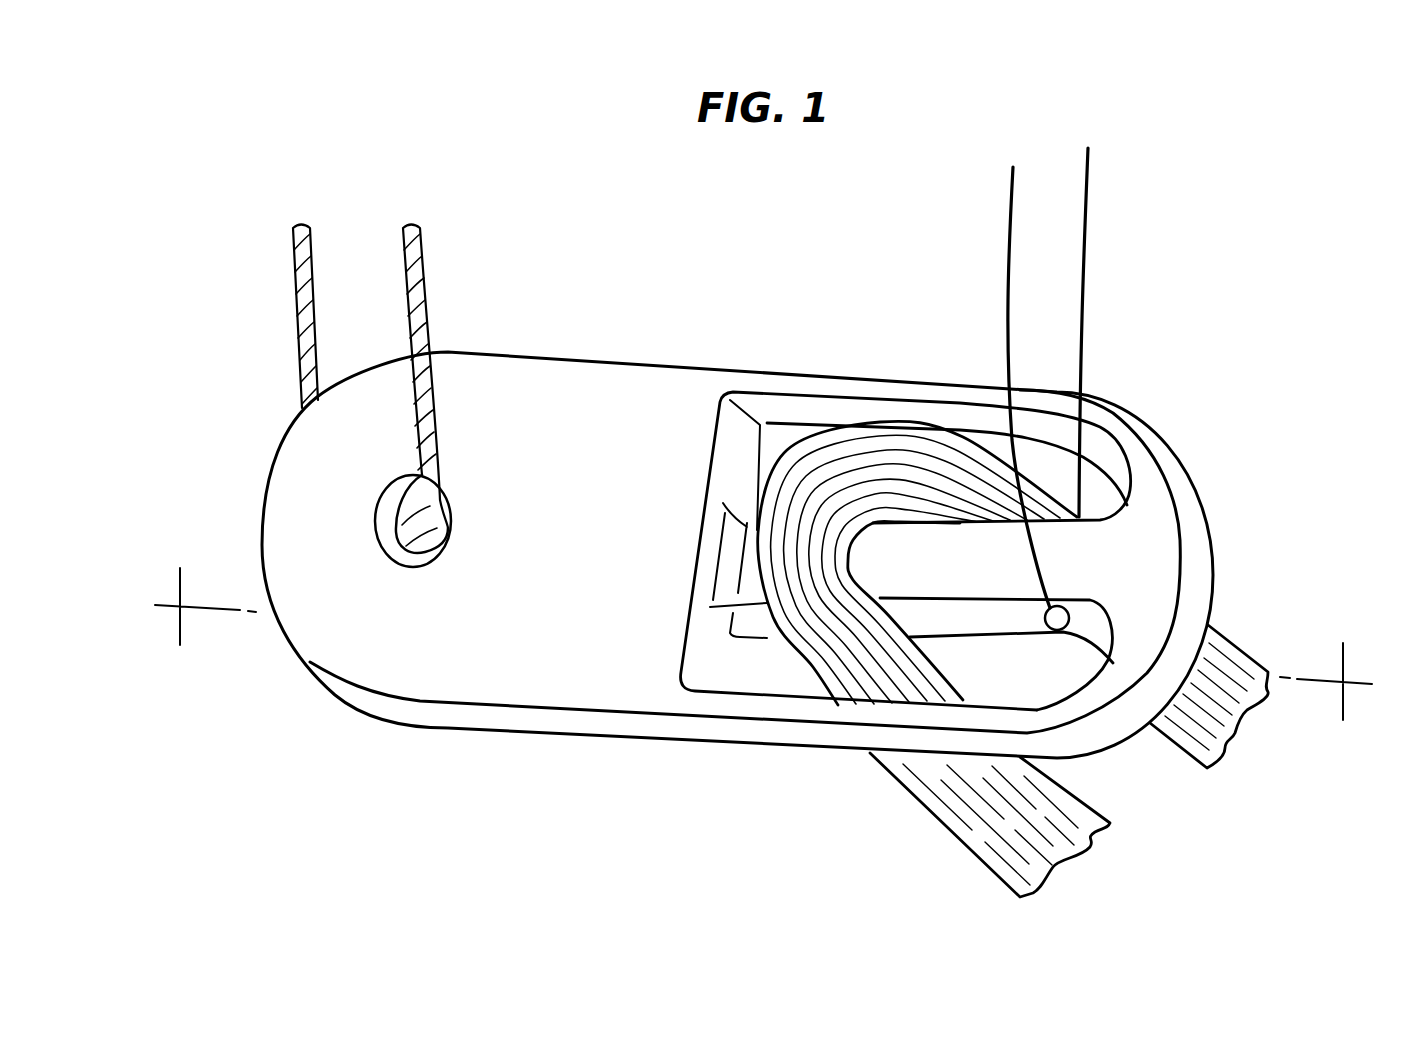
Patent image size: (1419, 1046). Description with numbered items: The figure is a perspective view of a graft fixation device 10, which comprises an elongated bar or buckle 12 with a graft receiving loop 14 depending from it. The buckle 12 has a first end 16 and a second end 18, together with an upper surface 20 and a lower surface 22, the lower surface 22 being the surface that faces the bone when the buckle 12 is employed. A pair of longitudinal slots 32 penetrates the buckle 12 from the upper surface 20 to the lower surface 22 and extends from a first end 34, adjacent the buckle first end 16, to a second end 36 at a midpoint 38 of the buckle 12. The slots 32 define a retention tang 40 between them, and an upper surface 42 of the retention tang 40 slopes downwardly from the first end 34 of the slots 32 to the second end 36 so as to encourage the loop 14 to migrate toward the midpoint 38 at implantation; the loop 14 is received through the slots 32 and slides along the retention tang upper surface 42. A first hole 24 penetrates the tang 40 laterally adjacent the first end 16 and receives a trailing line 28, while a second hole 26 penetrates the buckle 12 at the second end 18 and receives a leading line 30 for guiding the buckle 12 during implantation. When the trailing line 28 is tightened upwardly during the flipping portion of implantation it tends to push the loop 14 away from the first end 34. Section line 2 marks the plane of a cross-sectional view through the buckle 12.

The graft fixation device 10 is at (903, 335).
The buckle 12 is at (692, 336).
The graft receiving loop 14 is at (980, 827).
The first end 16 is at (1200, 565).
The second end 18 is at (257, 543).
The upper surface 20 is at (463, 673).
The lower surface 22 is at (506, 735).
The first hole 24 is at (1070, 620).
The second hole 26 is at (430, 515).
The trailing line 28 is at (1090, 323).
The leading line 30 is at (423, 260).
The longitudinal slots 32 is at (777, 680).
The first end of slots 34 is at (1127, 483).
The second end of slots 36 is at (710, 657).
The midpoint 38 is at (750, 385).
The retention tang 40 is at (983, 625).
The upper surface of retention tang 42 is at (1003, 573).
The section line 2- 2 is at (180, 605).